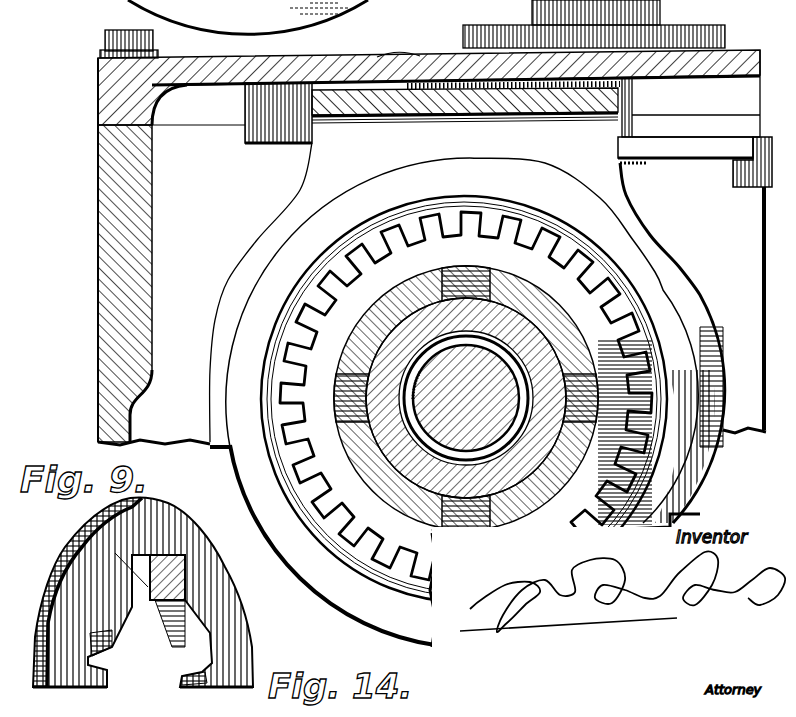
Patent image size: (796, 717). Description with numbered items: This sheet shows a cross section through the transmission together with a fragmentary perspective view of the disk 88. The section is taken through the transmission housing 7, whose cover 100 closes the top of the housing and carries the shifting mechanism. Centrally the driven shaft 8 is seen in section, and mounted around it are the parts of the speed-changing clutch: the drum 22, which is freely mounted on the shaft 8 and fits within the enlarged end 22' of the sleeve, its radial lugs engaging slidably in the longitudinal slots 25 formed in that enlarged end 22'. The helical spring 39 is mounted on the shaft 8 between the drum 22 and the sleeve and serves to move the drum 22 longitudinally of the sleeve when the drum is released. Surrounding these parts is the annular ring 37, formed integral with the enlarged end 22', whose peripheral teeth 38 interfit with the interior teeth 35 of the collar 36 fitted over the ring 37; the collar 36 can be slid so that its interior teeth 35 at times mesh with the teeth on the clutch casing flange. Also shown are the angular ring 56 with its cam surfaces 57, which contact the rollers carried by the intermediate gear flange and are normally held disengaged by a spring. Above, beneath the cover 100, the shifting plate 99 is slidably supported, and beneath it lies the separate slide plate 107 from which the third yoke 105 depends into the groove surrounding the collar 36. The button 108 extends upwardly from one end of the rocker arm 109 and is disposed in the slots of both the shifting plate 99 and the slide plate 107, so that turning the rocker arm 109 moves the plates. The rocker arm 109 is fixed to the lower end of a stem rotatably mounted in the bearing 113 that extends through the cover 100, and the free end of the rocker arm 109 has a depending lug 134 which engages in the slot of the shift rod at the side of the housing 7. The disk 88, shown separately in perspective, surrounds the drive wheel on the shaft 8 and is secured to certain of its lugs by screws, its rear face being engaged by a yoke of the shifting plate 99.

In FIG. 9, the transmission housing 7 is at (97, 292).
In FIG. 9, the driven shaft 8 is at (463, 513).
In FIG. 9, the drum 22 is at (466, 396).
In FIG. 9, the enlarged end of sleeve 22' is at (421, 515).
In FIG. 9, the longitudinal slots 25 is at (338, 422).
In FIG. 9, the interior teeth 35 is at (607, 293).
In FIG. 9, the collar 36 is at (643, 262).
In FIG. 9, the annular ring 37 is at (613, 363).
In FIG. 9, the peripheral teeth 38 is at (643, 258).
In FIG. 9, the helical spring 39 is at (413, 363).
In FIG. 9, the angular ring 56 is at (224, 17).
In FIG. 9, the cam surfaces 57 is at (362, 3).
In FIG. 14, the disk 88 is at (228, 613).
In FIG. 9, the shifting plate 99 is at (378, 96).
In FIG. 9, the cover 100 is at (347, 72).
In FIG. 9, the third yoke 105 is at (297, 200).
In FIG. 9, the slide plate 107 is at (322, 132).
In FIG. 9, the button 108 is at (433, 80).
In FIG. 9, the rocker arm 109 is at (667, 152).
In FIG. 9, the bearing 113 is at (533, 10).
In FIG. 9, the lug 134 is at (742, 175).